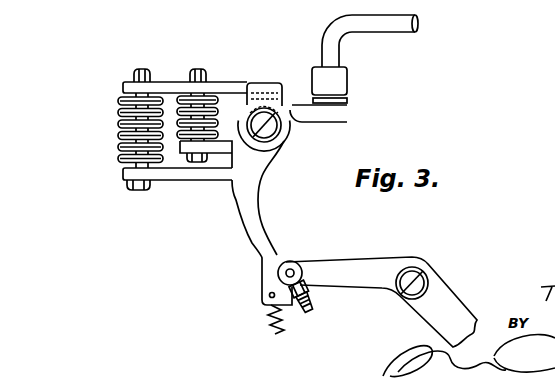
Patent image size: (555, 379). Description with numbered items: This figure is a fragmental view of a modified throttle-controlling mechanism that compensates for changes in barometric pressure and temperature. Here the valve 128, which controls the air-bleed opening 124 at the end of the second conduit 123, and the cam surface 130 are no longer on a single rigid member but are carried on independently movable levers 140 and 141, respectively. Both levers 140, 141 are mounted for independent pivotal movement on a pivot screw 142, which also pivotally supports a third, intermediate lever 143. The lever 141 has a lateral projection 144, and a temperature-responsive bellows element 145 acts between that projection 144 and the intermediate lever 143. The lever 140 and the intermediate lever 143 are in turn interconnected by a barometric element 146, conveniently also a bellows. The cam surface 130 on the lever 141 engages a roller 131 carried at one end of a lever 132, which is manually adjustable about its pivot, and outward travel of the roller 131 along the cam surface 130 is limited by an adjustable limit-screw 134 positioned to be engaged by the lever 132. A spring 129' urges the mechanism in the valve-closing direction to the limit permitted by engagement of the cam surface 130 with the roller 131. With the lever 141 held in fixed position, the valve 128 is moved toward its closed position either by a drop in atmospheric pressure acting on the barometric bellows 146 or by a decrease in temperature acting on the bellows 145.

The second conduit 123 is at (417, 33).
The air-bleed opening 124 is at (347, 82).
The valve 128 is at (347, 101).
The lever 140 is at (350, 114).
The pivot screw 142 is at (291, 134).
The barometric element 146 is at (220, 103).
The intermediate lever 143 is at (122, 85).
The temperature-responsive bellows element 145 is at (120, 130).
The lateral projection 144 is at (120, 172).
The lever 141 is at (253, 229).
The cam surface 130 is at (275, 243).
The roller 131 is at (293, 261).
The lever 132 is at (374, 258).
The limit-screw 134 is at (303, 312).
The spring 129' is at (253, 334).